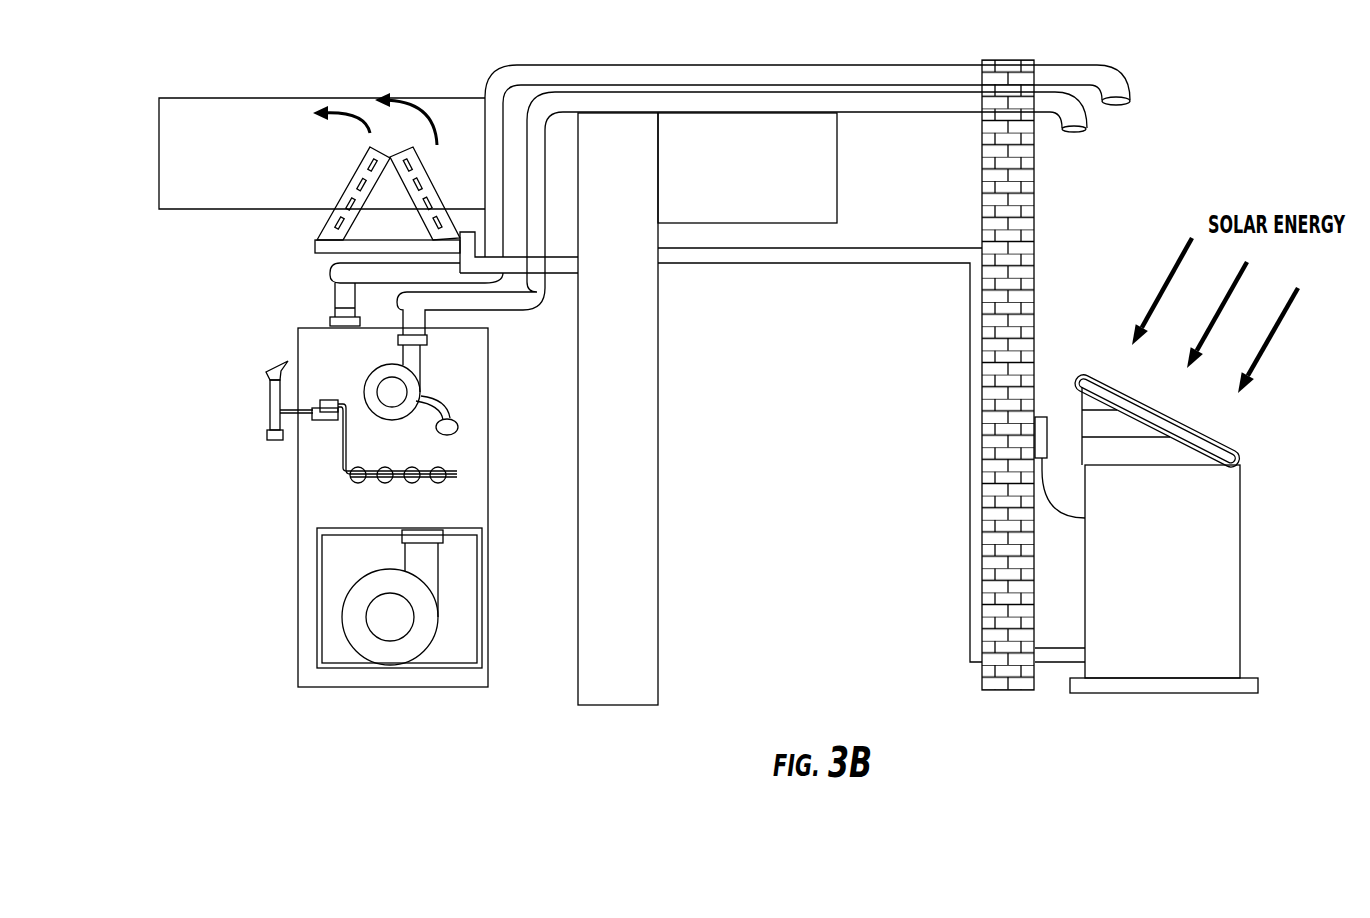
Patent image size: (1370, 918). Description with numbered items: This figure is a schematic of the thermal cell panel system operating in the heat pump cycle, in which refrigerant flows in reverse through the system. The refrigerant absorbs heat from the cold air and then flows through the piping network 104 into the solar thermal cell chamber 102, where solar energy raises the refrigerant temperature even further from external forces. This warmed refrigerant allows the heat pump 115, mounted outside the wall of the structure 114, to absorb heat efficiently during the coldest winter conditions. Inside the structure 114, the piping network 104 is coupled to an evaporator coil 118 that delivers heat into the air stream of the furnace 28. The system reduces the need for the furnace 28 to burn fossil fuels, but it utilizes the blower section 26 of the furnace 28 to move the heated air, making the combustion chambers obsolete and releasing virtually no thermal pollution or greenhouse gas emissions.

The blower section 26 is at (367, 615).
The furnace 28 is at (314, 477).
The solar thermal cell chamber 102 is at (1238, 440).
The piping network 104 is at (903, 263).
The structure 114 is at (1011, 65).
The heat pump 115 is at (1227, 640).
The evaporator coil 118 is at (366, 102).